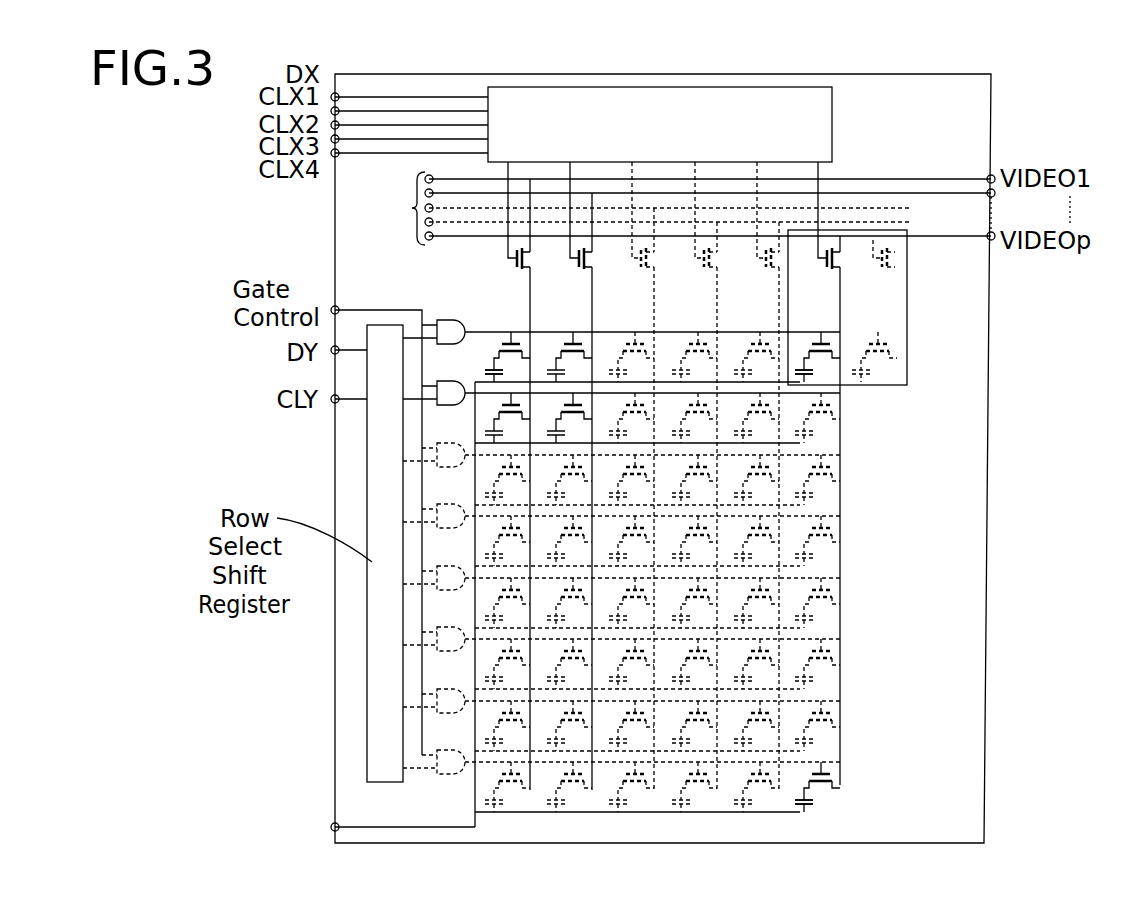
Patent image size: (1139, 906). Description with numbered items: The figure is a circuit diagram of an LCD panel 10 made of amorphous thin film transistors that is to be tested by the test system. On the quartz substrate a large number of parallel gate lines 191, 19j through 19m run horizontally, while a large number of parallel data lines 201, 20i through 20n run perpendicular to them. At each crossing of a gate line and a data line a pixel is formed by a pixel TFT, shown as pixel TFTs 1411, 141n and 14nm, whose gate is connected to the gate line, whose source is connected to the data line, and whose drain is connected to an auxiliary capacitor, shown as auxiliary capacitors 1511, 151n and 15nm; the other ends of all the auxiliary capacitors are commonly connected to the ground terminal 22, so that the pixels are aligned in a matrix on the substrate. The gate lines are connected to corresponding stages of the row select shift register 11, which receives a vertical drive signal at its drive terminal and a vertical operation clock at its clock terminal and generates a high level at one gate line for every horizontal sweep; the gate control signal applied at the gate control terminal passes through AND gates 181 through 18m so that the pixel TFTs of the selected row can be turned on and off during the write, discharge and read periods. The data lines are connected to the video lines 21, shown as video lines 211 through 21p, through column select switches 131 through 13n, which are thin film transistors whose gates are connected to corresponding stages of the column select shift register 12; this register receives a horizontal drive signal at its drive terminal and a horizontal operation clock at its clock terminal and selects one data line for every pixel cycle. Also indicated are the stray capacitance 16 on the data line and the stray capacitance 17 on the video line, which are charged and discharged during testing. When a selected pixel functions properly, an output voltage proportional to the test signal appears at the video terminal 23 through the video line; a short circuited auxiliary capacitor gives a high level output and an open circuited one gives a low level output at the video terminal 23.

The LCD panel 10 is at (1000, 100).
The row select shift register 11 is at (380, 323).
The column select shift register 12 is at (834, 118).
The column select switch 131 is at (517, 257).
The column select switch 13n is at (827, 253).
The pixel TFT 1411 is at (507, 342).
The pixel TFT 141n is at (850, 300).
The pixel TFT 14nm is at (840, 767).
The auxiliary capacitor 1511 is at (488, 371).
The auxiliary capacitor 151n is at (807, 377).
The auxiliary capacitor 15nm is at (815, 802).
The stray capacitance 16 is at (847, 307).
The stray capacitance 17 is at (897, 255).
The AND gate 181 is at (450, 326).
The AND gate 18m is at (439, 784).
The gate line 191 is at (682, 331).
The gate line 19j is at (684, 577).
The gate line 19m is at (688, 760).
The data line 201 is at (534, 305).
The data line 20i is at (653, 318).
The data line 20n is at (843, 306).
The video lines 21 is at (669, 213).
The video line 211 is at (918, 179).
The video line 21p is at (910, 236).
The ground terminal 22 is at (330, 827).
The video terminal 23 is at (993, 224).